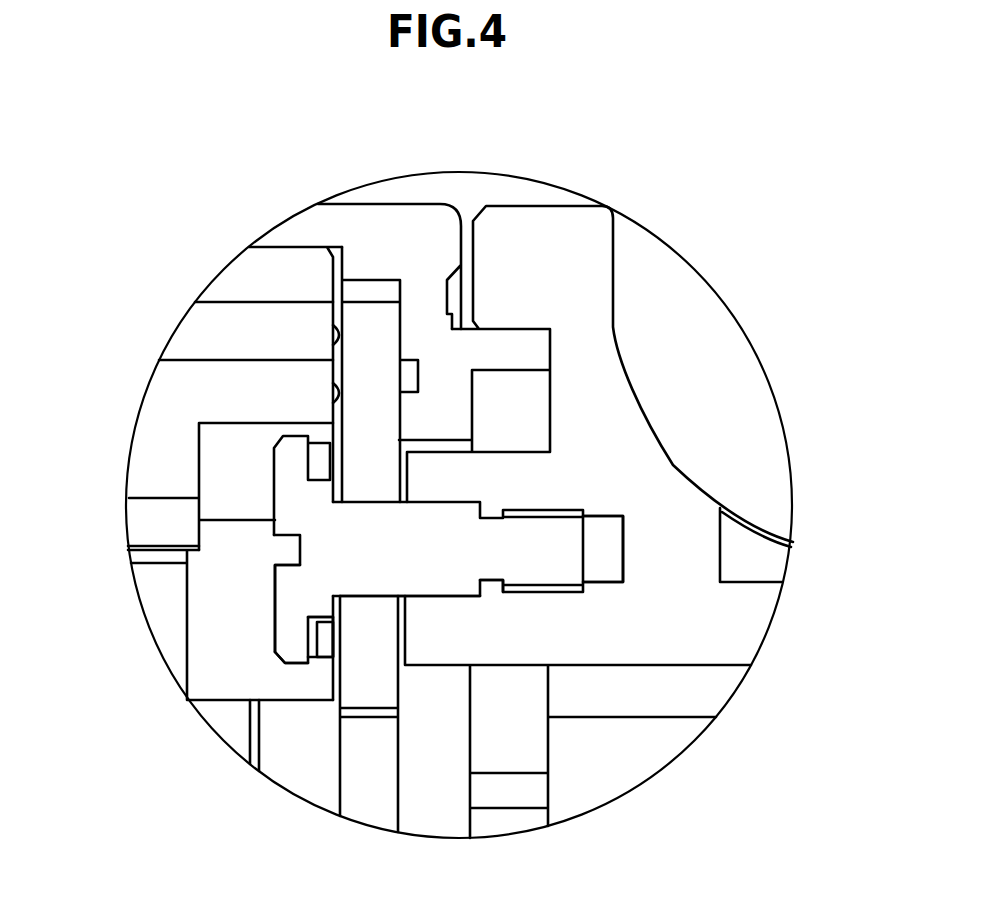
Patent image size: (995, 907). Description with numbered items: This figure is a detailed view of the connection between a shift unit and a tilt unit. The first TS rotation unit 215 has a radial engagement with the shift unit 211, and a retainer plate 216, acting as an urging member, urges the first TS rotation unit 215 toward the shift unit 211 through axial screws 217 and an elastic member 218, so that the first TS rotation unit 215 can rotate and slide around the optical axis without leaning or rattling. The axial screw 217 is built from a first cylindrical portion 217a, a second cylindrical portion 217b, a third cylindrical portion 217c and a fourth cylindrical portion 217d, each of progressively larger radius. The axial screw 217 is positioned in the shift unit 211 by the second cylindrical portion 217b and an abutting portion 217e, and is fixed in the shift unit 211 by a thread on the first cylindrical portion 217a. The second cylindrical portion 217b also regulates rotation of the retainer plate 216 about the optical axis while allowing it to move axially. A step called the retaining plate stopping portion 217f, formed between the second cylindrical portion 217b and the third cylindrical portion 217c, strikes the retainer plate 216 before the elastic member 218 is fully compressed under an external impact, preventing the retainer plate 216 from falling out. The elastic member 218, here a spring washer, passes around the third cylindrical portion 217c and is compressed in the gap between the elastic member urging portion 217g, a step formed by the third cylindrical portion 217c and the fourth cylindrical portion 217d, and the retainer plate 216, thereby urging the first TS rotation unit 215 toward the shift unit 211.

The shift unit 211 is at (588, 393).
The first TS rotation unit 215 is at (407, 232).
The retainer plate 216 is at (367, 402).
The axial screw 217 is at (440, 548).
The first cylindrical portion 217a is at (552, 596).
The second cylindrical portion 217b is at (435, 597).
The third cylindrical portion 217c is at (315, 657).
The fourth cylindrical portion 217d is at (297, 663).
The abutting portion 217e is at (483, 595).
The retaining plate stopping portion 217f is at (333, 605).
The elastic member urging portion 217g is at (314, 638).
The elastic member 218 is at (318, 462).